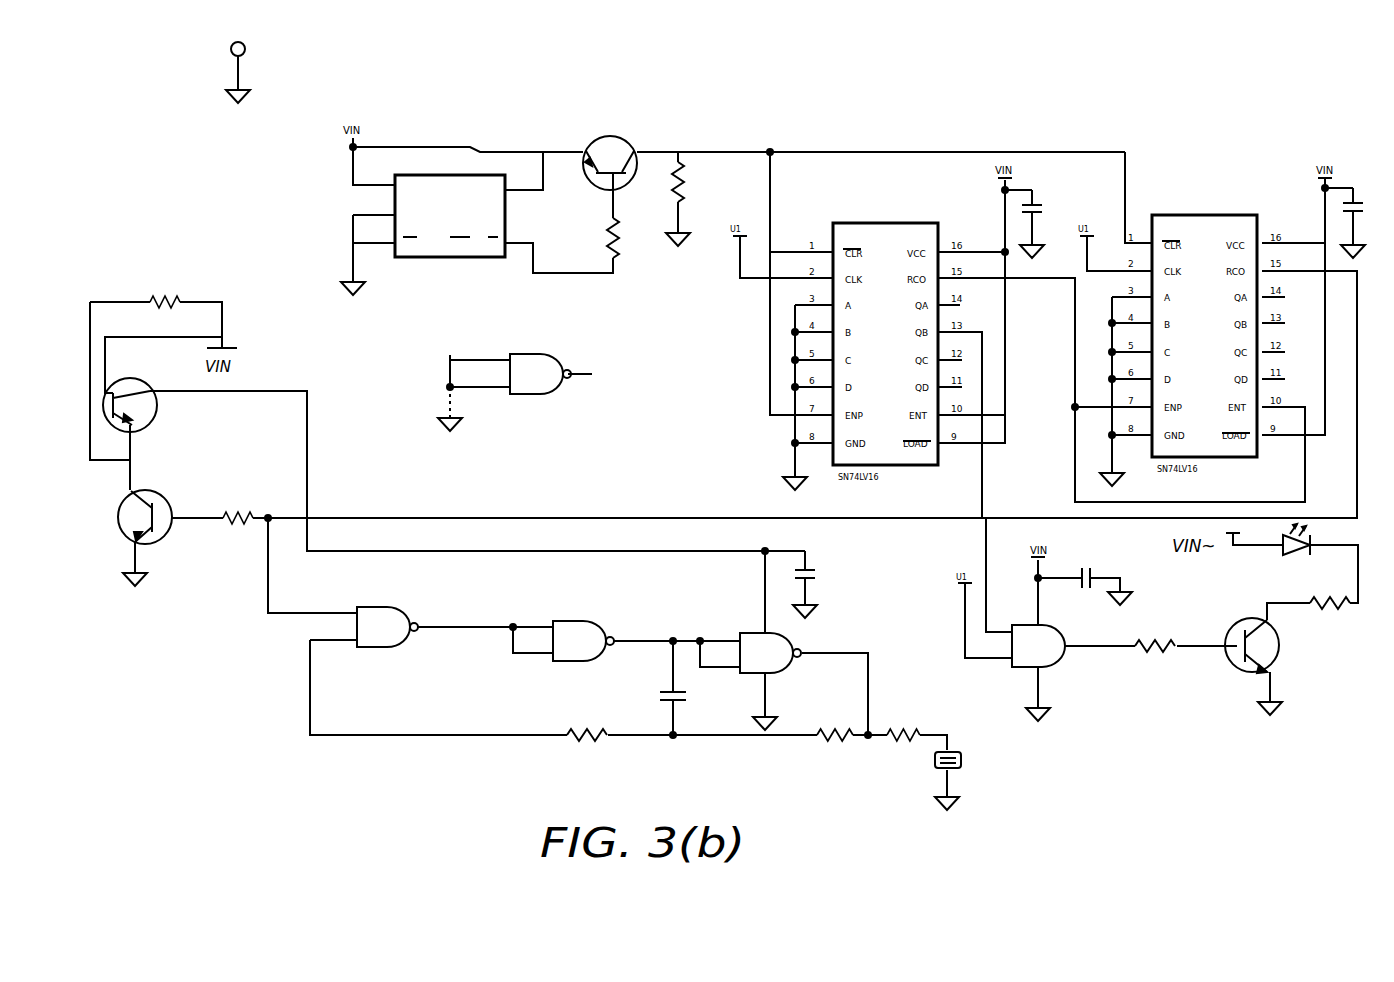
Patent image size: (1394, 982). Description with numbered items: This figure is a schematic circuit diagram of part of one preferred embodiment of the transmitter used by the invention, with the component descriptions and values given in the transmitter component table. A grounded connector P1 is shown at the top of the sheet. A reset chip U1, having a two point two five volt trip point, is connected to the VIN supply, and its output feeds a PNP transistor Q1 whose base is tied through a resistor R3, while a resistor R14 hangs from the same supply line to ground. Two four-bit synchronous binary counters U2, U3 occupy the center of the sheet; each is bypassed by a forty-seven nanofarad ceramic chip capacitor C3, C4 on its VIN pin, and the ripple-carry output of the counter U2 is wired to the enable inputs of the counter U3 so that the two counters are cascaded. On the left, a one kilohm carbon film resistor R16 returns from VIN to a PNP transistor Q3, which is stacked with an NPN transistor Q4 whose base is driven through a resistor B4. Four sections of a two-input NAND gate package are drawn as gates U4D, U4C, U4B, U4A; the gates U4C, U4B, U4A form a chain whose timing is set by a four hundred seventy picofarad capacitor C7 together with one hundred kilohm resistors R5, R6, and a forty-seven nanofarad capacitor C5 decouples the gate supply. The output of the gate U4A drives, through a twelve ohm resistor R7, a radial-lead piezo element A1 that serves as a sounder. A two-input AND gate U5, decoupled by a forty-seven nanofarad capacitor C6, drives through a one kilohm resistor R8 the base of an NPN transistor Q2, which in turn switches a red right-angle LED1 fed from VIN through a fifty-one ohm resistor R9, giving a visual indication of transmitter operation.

The connector P1 is at (238, 67).
The reset chip U1 is at (452, 216).
The PNP transistor Q1 is at (631, 152).
The resistor 350 R3 is at (621, 238).
The resistor 100K R14 is at (690, 182).
The 4 bit synchronous binary counter U2 is at (886, 346).
The 4 bit synchronous binary counter U3 is at (1205, 338).
The ceramic chip capacitor C3 is at (1042, 213).
The ceramic chip capacitor C4 is at (1363, 212).
The carbon film resistor R16 is at (162, 302).
The PNP transistor Q3 is at (156, 412).
The NPN transistor Q4 is at (169, 509).
The resistor 1K B4 is at (233, 520).
The 2 input NAND gate U4D is at (535, 377).
The 2 input NAND gate U4C is at (392, 632).
The 2 input NAND gate U4B is at (596, 646).
The 2 input NAND gate U4A is at (783, 653).
The ceramic chip capacitor C5 is at (816, 581).
The ceramic chip capacitor C7 is at (683, 702).
The carbon film resistor R5 is at (587, 734).
The carbon film resistor R6 is at (834, 734).
The carbon film resistor R7 is at (903, 734).
The piezo element A1 is at (977, 759).
The 2 input AND gate U5 is at (1057, 646).
The ceramic chip capacitor C6 is at (1087, 579).
The carbon film resistor R8 is at (1155, 646).
The NPN transistor Q2 is at (1281, 645).
The carbon film resistor R9 is at (1330, 604).
The red right angle thruhole LED LED1 is at (1313, 550).